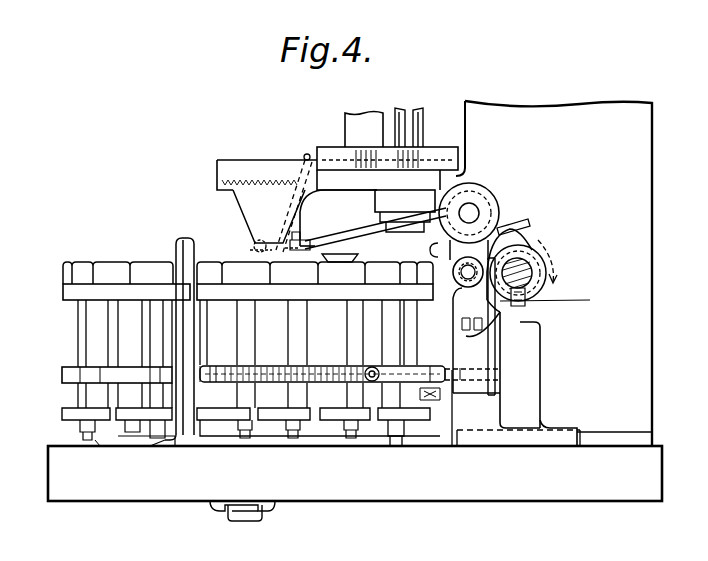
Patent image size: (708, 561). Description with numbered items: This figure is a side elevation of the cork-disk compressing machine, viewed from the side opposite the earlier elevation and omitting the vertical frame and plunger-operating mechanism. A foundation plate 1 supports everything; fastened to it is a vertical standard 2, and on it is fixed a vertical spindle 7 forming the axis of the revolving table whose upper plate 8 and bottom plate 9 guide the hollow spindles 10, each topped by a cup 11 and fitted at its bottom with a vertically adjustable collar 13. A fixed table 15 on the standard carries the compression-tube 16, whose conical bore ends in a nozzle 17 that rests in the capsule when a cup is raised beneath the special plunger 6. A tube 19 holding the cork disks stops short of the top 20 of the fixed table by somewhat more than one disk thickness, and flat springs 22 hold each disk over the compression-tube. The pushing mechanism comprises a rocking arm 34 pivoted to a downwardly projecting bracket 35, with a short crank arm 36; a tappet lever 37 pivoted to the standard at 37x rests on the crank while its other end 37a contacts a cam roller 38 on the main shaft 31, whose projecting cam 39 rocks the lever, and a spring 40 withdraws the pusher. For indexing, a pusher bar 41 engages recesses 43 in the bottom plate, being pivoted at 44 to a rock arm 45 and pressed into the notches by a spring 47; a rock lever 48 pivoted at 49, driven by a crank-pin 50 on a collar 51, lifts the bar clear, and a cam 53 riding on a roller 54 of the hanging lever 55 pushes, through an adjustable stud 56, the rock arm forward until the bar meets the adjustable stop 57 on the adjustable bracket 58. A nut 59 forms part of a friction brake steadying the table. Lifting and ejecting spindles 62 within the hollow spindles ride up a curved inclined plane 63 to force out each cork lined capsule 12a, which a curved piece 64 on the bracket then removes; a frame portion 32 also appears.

The foundation plate 1 is at (543, 488).
The vertical bracket or standard 2 is at (554, 273).
The special plunger 6 is at (408, 110).
The vertical spindle 7 is at (263, 508).
The upper plate of table 8 is at (78, 299).
The bottom plate of table 9 is at (76, 366).
The hollow spindles 10 is at (242, 329).
The cup 11 is at (230, 272).
The cork lined metal capsule 12a is at (366, 259).
The vertically adjustable collar 13 is at (283, 438).
The fixed table 15 is at (378, 182).
The compression-tube 16 is at (404, 210).
The nozzle 17 is at (443, 247).
The tube or container 19 is at (360, 118).
The top of table 20 is at (376, 166).
The flat springs 22 is at (410, 157).
The main shaft 31 is at (535, 292).
The pedestal 32 is at (541, 400).
The rocking arm 34 is at (306, 156).
The downwardly projecting bracket 35 is at (269, 216).
The short crank arm 36 is at (284, 258).
The tappet lever 37 is at (320, 238).
The pivot point 37x is at (469, 212).
The end of tappet lever 37a is at (516, 218).
The cam roller 38 is at (560, 266).
The projecting cam 39 is at (530, 238).
The spring 40 is at (244, 178).
The pusher bar 41 is at (314, 366).
The recesses 43 is at (110, 372).
The pivot 44 is at (372, 365).
The rock arm 45 is at (393, 440).
The spring 47 is at (268, 366).
The rock lever 48 is at (492, 362).
The pivot 49 is at (536, 321).
The crank-pin 50 is at (590, 300).
The collar 51 is at (530, 306).
The cam 53 is at (526, 264).
The roller 54 is at (451, 316).
The hanging lever 55 is at (473, 338).
The adjustable pin or stud 56 is at (455, 440).
The adjustable stop 57 is at (170, 438).
The adjustable bracket 58 is at (177, 250).
The nut 59 is at (214, 505).
The lifting and ejecting spindles 62 is at (97, 440).
The curved inclined plane 63 is at (332, 442).
The curved piece 64 is at (217, 244).